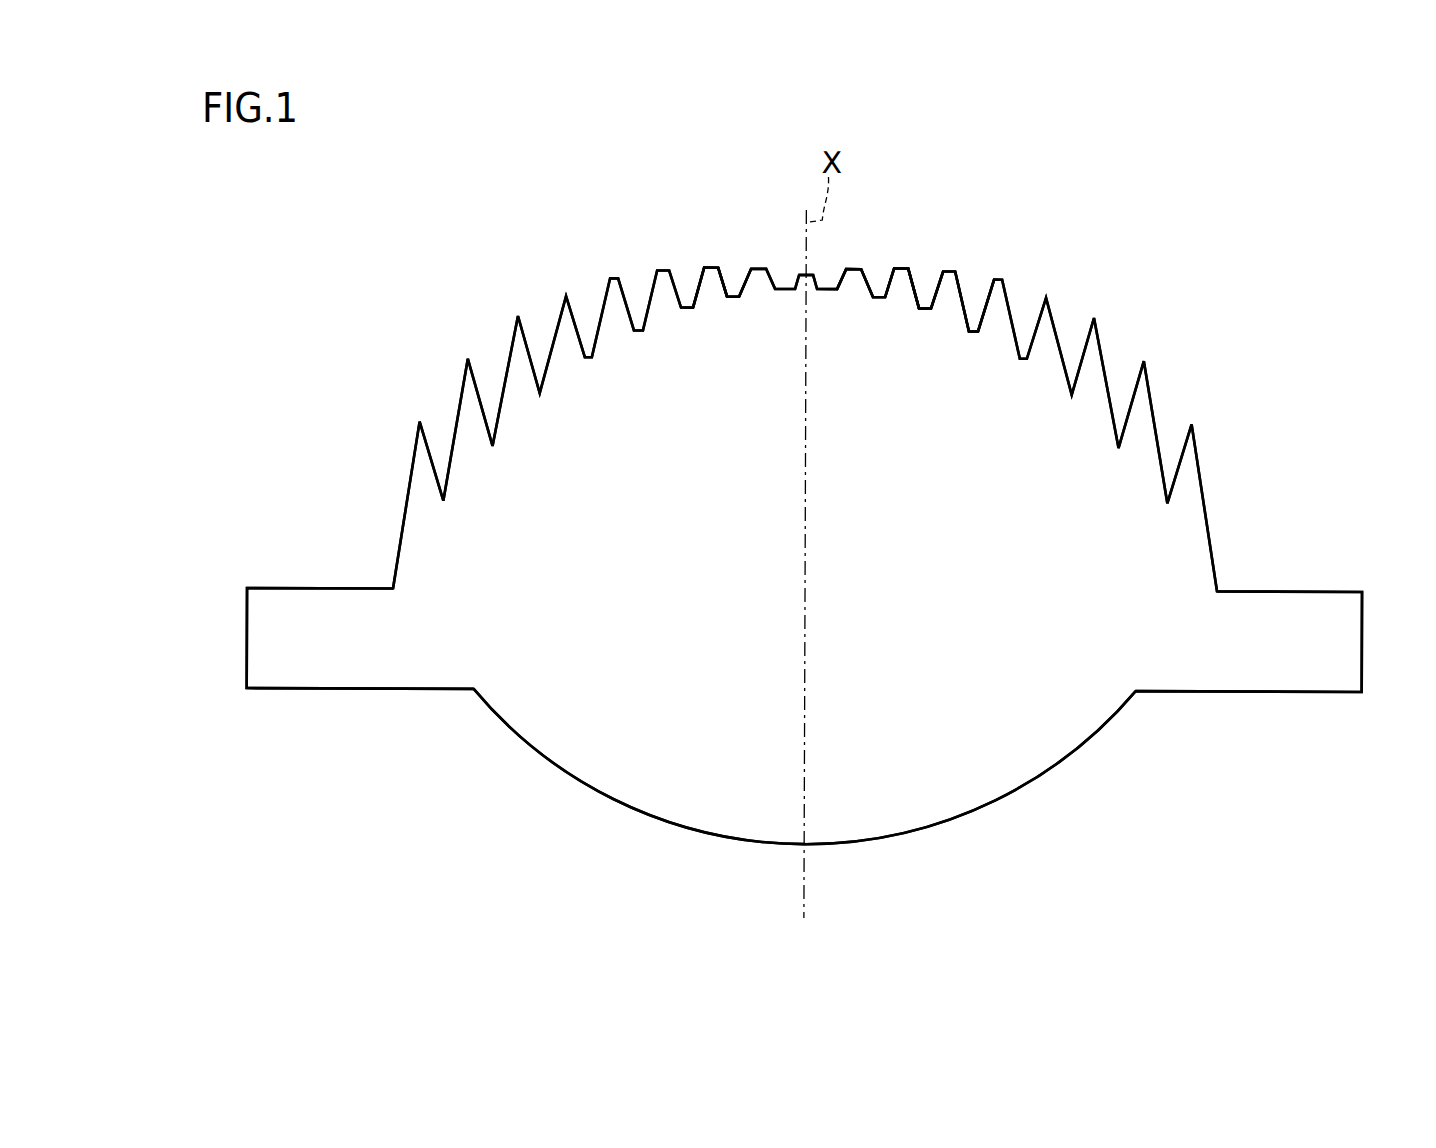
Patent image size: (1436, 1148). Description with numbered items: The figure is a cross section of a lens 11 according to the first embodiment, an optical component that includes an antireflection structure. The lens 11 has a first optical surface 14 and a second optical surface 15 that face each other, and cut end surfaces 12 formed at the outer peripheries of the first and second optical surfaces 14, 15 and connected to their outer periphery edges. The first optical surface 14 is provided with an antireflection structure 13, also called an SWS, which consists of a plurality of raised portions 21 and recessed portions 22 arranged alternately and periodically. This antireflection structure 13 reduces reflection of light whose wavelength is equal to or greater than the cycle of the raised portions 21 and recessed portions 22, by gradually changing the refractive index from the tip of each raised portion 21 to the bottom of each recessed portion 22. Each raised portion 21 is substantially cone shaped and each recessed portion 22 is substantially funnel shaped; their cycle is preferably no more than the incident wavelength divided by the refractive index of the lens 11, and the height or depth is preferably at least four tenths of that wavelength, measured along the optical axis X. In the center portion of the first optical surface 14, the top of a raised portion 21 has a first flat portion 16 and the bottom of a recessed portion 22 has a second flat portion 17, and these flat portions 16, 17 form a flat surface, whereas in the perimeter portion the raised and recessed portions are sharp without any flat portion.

The lens 11 is at (1292, 212).
The cut end surfaces 12 is at (1303, 590).
The antireflection structure 13 is at (553, 314).
The first optical surface 14 is at (1006, 304).
The second optical surface 15 is at (938, 824).
The first flat portion 16 is at (708, 268).
The second flat portion 17 is at (737, 297).
The raised portions 21 is at (855, 267).
The recessed portions 22 is at (977, 333).